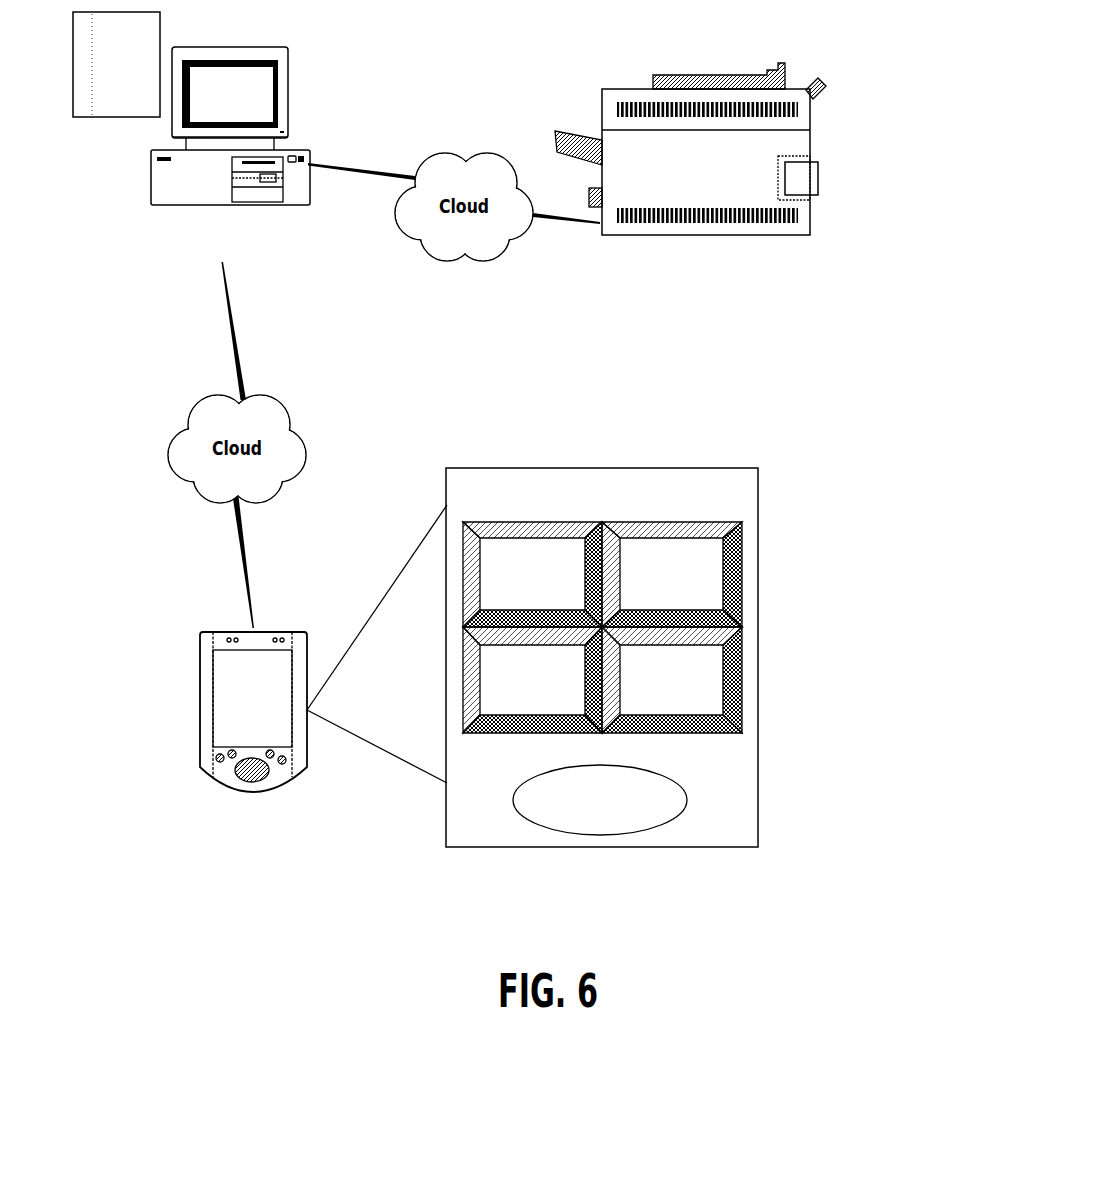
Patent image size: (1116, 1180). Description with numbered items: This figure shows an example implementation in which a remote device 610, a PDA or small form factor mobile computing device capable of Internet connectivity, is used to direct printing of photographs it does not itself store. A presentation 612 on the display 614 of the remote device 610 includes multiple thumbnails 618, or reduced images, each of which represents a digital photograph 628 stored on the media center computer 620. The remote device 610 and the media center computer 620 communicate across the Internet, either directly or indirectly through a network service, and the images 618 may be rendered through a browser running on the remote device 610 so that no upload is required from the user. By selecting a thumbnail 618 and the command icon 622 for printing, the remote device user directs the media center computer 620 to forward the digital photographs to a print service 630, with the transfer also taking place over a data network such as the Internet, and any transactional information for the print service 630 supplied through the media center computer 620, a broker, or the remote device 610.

The remote device 610 is at (253, 739).
The presentation 612 is at (653, 627).
The display 614 is at (645, 657).
The thumbnails 618 is at (602, 627).
The media center computer 620 is at (229, 154).
The command icon 622 is at (600, 800).
The digital photograph 628 is at (116, 64).
The print service 630 is at (690, 176).